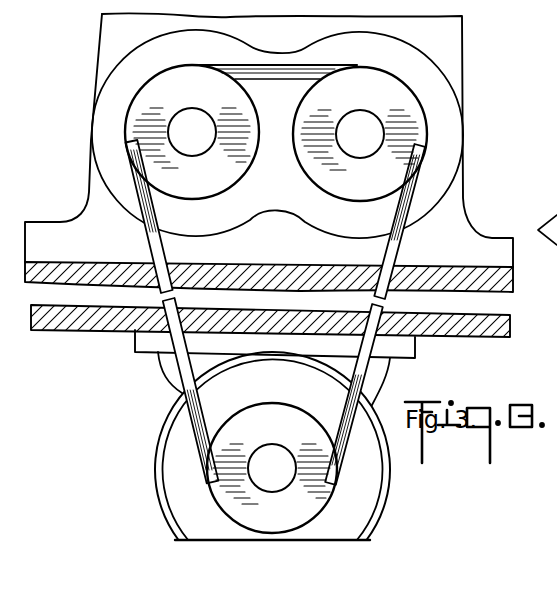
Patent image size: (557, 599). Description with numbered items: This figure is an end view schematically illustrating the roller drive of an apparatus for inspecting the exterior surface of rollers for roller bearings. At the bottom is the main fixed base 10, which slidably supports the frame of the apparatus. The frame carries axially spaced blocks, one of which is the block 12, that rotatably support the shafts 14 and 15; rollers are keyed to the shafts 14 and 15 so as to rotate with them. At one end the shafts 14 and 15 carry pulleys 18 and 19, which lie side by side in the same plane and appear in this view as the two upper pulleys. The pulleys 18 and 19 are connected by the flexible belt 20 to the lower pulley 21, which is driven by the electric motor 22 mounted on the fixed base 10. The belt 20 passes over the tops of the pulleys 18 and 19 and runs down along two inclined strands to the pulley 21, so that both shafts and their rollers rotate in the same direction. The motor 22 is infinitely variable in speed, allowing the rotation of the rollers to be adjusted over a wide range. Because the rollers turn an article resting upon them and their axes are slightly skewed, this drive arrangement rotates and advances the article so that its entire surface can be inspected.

The main fixed base 10 is at (456, 338).
The block 12 is at (452, 49).
The shaft 14 is at (377, 98).
The shaft 15 is at (200, 118).
The pulley 18 is at (422, 148).
The pulley 19 is at (133, 150).
The flexible belt 20 is at (148, 236).
The pulley 21 is at (214, 484).
The electric motor 22 is at (372, 488).